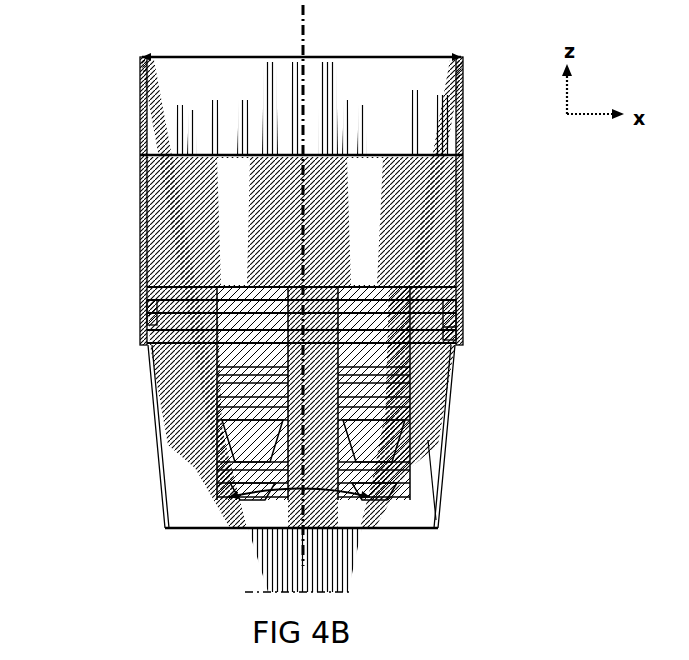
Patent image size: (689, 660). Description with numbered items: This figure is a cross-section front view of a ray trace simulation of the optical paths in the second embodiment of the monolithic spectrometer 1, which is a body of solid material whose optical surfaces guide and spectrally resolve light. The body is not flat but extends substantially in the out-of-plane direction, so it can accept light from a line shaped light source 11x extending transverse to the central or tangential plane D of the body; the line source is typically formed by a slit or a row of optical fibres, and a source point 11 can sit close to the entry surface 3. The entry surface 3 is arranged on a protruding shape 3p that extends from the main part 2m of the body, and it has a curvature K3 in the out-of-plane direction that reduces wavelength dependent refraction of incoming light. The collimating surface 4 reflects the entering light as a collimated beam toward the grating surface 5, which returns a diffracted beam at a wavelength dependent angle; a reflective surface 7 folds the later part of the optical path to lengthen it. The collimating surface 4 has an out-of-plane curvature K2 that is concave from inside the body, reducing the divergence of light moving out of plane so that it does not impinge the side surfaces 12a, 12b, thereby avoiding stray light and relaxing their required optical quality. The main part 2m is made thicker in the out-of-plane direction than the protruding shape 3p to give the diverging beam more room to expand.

The monolithic spectrometer 1 is at (100, 86).
The out-of-plane curvature K2 is at (222, 56).
The tangential plane D is at (302, 47).
The collimating surface 4 is at (358, 83).
The side surface 12a is at (128, 277).
The side surface 12b is at (468, 277).
The main part of the body 2m is at (475, 316).
The grating surface 5 is at (422, 358).
The protruding shape 3p is at (397, 473).
The entry surface 3 is at (350, 502).
The curvature of the entry surface K3 is at (230, 498).
The reflective surface 7 is at (420, 515).
The source point 11 is at (275, 583).
The line shaped light source 11x is at (277, 591).